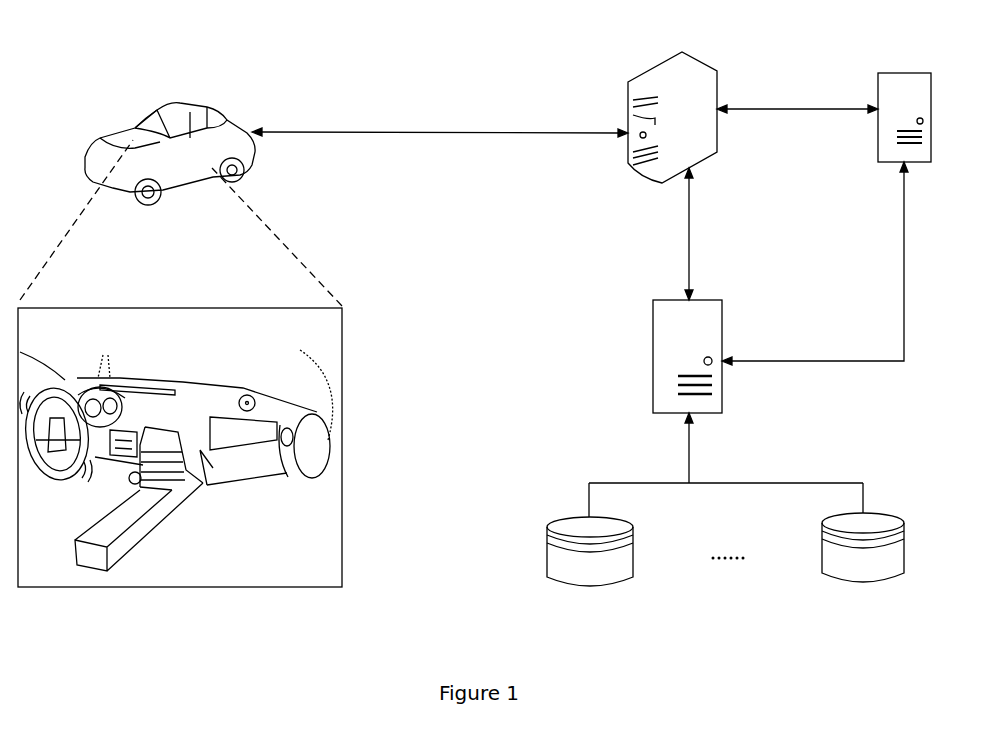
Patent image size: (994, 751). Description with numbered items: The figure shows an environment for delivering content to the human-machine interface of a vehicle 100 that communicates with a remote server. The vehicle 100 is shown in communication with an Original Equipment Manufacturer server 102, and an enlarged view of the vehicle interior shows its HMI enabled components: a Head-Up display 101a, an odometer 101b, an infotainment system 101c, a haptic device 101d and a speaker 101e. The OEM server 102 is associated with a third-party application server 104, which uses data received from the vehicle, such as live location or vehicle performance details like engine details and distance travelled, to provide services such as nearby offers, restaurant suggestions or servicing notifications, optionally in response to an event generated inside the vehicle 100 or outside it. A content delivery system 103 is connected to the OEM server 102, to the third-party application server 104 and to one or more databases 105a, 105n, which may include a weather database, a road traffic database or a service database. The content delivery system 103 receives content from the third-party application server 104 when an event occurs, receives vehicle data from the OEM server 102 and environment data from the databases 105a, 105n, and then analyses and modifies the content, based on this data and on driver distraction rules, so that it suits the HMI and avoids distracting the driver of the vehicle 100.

The vehicle 100 is at (182, 100).
The Head-Up display 101a is at (112, 362).
The odometer 101b is at (110, 407).
The infotainment system 101c is at (175, 440).
The haptic device 101d is at (40, 397).
The speaker 101e is at (243, 396).
The Original Equipment Manufacturer (OEM) server 102 is at (700, 42).
The content delivery system 103 is at (712, 305).
The third-party application server 104 is at (881, 76).
The database 105a is at (548, 523).
The database 105n is at (880, 517).